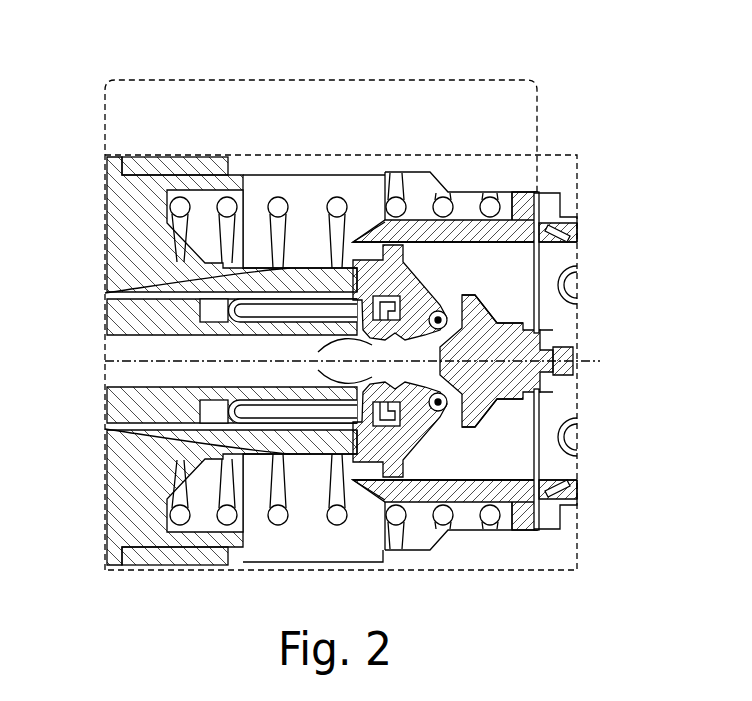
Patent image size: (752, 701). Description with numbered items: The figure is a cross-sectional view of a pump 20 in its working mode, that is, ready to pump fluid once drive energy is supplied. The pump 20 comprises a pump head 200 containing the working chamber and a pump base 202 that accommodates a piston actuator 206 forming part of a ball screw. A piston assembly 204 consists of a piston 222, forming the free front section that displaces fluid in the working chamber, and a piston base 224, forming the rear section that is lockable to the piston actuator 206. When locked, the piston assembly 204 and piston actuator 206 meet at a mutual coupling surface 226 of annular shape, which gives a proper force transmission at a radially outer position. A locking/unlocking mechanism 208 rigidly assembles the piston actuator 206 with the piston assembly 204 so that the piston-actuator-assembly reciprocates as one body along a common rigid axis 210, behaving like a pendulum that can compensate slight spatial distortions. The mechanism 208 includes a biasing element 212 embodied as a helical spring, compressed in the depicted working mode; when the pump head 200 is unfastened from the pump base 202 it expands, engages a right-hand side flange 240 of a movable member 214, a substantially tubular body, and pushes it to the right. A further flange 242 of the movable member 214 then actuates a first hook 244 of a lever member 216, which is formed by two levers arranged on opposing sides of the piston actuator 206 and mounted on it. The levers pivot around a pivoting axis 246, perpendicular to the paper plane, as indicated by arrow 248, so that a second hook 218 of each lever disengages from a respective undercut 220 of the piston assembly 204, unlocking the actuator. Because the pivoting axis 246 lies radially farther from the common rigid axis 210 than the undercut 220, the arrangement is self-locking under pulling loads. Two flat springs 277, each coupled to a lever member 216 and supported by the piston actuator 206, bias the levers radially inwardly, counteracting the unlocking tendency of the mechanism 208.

The pump 20 is at (150, 55).
The pump head 200 is at (522, 515).
The pump base 202 is at (372, 80).
The piston assembly 204 is at (523, 350).
The piston actuator 206 is at (100, 303).
The locking/unlocking mechanism 208 is at (406, 262).
The common rigid axis 210 is at (147, 362).
The biasing element 212 is at (323, 200).
The movable member 214 is at (524, 200).
The lever member 216 is at (105, 293).
The second hook 218 is at (290, 398).
The undercut 220 is at (342, 350).
The piston 222 is at (567, 377).
The piston base 224 is at (512, 533).
The mutual coupling surface 226 is at (463, 317).
The right-hand side flange 240 is at (533, 212).
The further flange 242 is at (372, 240).
The first hook 244 is at (410, 218).
The pivoting axis 246 is at (439, 318).
The arrow 248 is at (410, 293).
The flat spring 277 is at (207, 340).